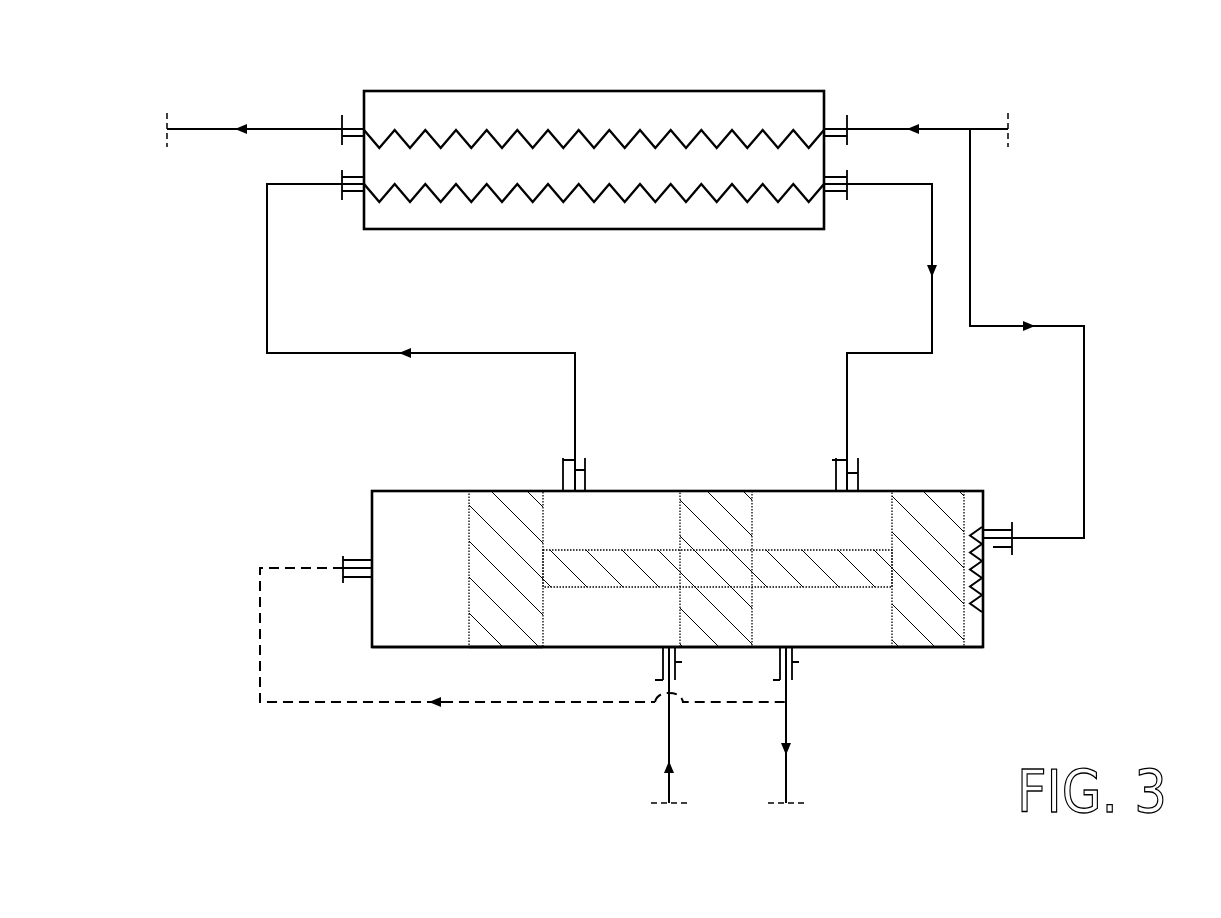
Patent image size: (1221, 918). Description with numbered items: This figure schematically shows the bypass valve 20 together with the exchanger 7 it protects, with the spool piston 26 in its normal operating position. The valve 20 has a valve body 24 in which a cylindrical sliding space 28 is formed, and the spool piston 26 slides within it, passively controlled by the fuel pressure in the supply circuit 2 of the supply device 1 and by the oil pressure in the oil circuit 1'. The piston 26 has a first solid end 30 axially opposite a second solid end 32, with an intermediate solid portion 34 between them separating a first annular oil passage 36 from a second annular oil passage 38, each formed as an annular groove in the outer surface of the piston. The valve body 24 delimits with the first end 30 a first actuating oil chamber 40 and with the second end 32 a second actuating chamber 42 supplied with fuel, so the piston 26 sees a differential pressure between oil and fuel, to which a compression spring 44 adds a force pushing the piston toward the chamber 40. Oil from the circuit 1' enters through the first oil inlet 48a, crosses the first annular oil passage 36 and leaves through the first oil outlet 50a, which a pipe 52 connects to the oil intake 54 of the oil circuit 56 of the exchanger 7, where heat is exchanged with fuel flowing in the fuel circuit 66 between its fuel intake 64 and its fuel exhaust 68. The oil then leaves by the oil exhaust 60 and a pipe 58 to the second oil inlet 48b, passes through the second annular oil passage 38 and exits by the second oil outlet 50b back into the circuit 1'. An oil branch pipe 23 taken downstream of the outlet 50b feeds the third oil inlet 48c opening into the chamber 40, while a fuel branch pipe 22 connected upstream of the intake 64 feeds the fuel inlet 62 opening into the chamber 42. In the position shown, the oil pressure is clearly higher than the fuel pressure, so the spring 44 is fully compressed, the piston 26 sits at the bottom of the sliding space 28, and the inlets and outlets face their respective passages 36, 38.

The supply device 1 is at (1044, 56).
The oil circuit 1' is at (324, 656).
The supply circuit 2 is at (956, 126).
The exchanger 7 is at (646, 86).
The bypass valve 20 is at (994, 466).
The fuel branch pipe 22 is at (1084, 466).
The oil branch pipe 23 is at (378, 706).
The valve body 24 is at (874, 653).
The spool piston 26 is at (941, 633).
The sliding space 28 is at (562, 640).
The first solid end 30 is at (505, 507).
The second solid end 32 is at (934, 510).
The intermediate solid portion 34 is at (720, 510).
The first annular oil passage 36 is at (632, 533).
The second annular oil passage 38 is at (840, 543).
The first actuating oil chamber 40 is at (428, 555).
The second actuating chamber 42 is at (977, 621).
The compression spring 44 is at (979, 584).
The first oil inlet 48a is at (683, 660).
The second oil inlet 48b is at (856, 470).
The third oil inlet 48c is at (342, 555).
The first oil outlet 50a is at (590, 470).
The second oil outlet 50b is at (788, 660).
The pipe 52 is at (267, 290).
The oil intake 54 is at (352, 194).
The oil circuit 56 is at (614, 200).
The pipe 58 is at (932, 312).
The oil exhaust 60 is at (838, 197).
The fuel inlet 62 is at (1000, 550).
The fuel intake 64 is at (845, 116).
The fuel circuit 66 is at (561, 145).
The fuel exhaust 68 is at (342, 114).